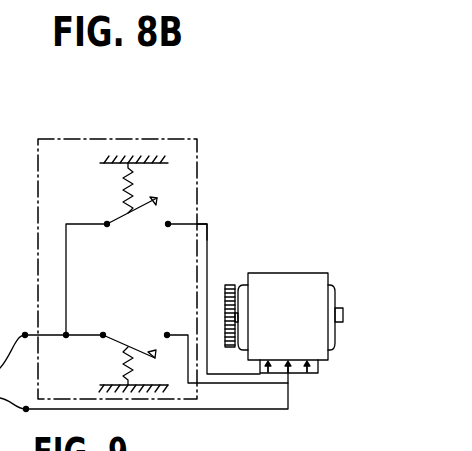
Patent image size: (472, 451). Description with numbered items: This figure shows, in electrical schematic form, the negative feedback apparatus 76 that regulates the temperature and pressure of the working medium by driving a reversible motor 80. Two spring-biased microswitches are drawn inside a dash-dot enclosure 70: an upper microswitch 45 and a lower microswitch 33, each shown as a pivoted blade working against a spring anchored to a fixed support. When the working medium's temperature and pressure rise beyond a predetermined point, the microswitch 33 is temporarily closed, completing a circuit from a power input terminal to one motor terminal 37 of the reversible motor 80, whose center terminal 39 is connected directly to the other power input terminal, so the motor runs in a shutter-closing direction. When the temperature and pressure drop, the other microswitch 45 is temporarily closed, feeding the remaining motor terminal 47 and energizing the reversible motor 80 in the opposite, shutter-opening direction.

The control switch housing 70 is at (98, 269).
The microswitch 45 is at (144, 214).
The microswitch 33 is at (132, 342).
The negative feedback apparatus 76 is at (204, 219).
The reversible motor 80 is at (284, 323).
The motor terminal 47 is at (268, 366).
The center terminal 39 is at (289, 366).
The motor terminal 37 is at (307, 366).